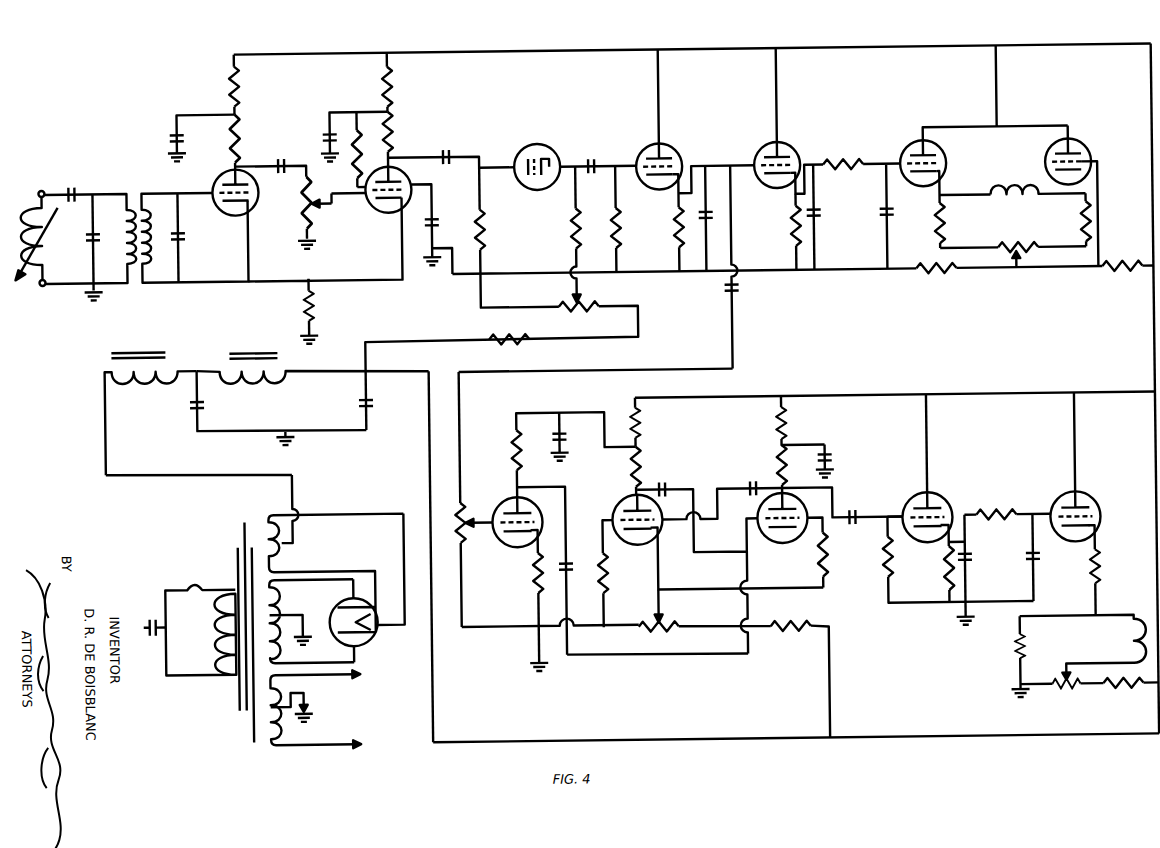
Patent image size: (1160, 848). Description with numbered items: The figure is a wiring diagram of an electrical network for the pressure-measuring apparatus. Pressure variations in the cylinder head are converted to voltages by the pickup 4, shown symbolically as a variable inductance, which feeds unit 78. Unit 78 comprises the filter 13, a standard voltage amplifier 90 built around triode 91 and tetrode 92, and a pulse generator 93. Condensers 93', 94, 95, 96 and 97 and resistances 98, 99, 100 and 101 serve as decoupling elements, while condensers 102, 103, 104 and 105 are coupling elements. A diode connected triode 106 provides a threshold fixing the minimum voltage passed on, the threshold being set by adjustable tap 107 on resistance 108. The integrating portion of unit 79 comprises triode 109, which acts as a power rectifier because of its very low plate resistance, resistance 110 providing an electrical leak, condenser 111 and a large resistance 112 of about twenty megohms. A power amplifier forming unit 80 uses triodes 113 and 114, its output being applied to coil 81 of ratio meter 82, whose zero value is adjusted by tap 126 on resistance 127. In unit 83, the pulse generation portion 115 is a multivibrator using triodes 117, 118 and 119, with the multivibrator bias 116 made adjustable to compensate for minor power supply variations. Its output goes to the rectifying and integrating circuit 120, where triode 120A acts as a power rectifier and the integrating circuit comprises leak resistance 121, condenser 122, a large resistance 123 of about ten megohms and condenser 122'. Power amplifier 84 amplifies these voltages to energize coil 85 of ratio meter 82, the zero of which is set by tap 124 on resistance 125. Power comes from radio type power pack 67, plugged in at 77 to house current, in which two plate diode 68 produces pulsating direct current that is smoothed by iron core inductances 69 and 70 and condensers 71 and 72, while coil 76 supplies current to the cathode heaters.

The pickup 4 is at (41, 278).
The filter 13 is at (110, 184).
The triode 91 is at (226, 208).
The tetrode 92 is at (381, 207).
The pulse generator 93 is at (683, 209).
The condenser 93' is at (184, 138).
The condenser 94 is at (326, 133).
The condenser 95 is at (441, 220).
The resistance 98 is at (232, 83).
The resistance 99 is at (394, 90).
The standard voltage amplifier 90 is at (296, 51).
The condenser 102 is at (285, 167).
The condenser 103 is at (447, 150).
The condenser 104 is at (602, 152).
The diode connected triode 106 is at (548, 148).
The adjustable tap 107 is at (574, 288).
The resistance 108 is at (595, 300).
The triode 109 is at (793, 150).
The resistance 110 is at (794, 225).
The condenser 111 is at (822, 216).
The large resistance 112 is at (855, 160).
The triode 113 is at (947, 163).
The triode 114 is at (1097, 165).
The coil 81 is at (990, 203).
The resistance 127 is at (1022, 246).
The tap 126 is at (1024, 267).
The power amplifier 80 is at (913, 275).
The ratio meter 82 is at (1030, 275).
The integrating unit 79 is at (806, 273).
The unit 78 is at (382, 277).
The iron core inductance 69 is at (135, 345).
The iron core inductance 70 is at (243, 346).
The condenser 71 is at (206, 399).
The condenser 72 is at (373, 399).
The power pack 67 is at (238, 557).
The plug 77 is at (145, 614).
The two plate diode 68 is at (370, 636).
The coil 76 is at (301, 713).
The resistance 100 is at (510, 446).
The condenser 96 is at (566, 435).
The triode 117 is at (505, 500).
The condenser 105 is at (566, 565).
The triode 118 is at (610, 506).
The pulse generation portion 115 is at (714, 512).
The resistance 101 is at (776, 422).
The condenser 97 is at (833, 456).
The multivibrator bias 116 is at (659, 603).
The triode 119 is at (779, 546).
The multivibrator unit 83 is at (706, 656).
The rectifying and integrating circuit 120 is at (940, 497).
The triode 120A is at (916, 495).
The power amplifier 84 is at (1058, 497).
The large resistance 123 is at (998, 512).
The leak resistance 121 is at (943, 567).
The condenser 122 is at (982, 569).
The condenser 122' is at (1047, 557).
The coil 85 is at (1126, 642).
The tap 124 is at (1060, 677).
The resistance 125 is at (1066, 692).